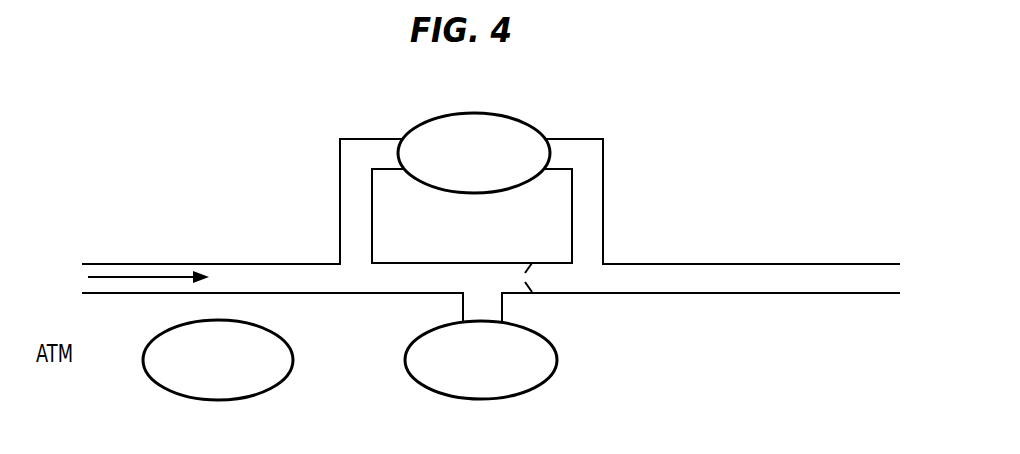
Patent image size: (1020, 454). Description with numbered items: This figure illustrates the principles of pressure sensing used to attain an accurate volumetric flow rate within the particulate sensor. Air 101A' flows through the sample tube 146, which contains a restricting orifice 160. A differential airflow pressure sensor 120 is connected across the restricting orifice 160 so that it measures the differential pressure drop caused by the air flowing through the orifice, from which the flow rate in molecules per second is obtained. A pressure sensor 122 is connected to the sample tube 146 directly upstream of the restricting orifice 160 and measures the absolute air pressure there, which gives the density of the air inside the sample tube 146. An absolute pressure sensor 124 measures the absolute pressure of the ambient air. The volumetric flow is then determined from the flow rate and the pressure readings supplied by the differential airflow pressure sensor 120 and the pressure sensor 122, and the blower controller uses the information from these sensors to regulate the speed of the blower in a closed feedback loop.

The sample tube 146 is at (280, 277).
The air 101A' is at (140, 242).
The restricting orifice 160 is at (550, 298).
The differential airflow pressure sensor 120 is at (454, 179).
The absolute pressure sensor 124 is at (198, 374).
The pressure sensor 122 is at (461, 374).